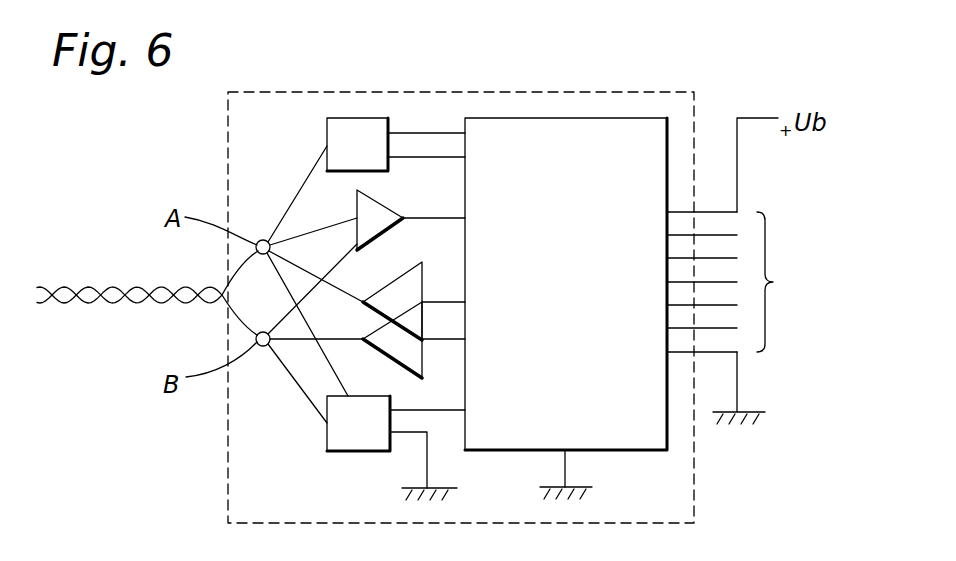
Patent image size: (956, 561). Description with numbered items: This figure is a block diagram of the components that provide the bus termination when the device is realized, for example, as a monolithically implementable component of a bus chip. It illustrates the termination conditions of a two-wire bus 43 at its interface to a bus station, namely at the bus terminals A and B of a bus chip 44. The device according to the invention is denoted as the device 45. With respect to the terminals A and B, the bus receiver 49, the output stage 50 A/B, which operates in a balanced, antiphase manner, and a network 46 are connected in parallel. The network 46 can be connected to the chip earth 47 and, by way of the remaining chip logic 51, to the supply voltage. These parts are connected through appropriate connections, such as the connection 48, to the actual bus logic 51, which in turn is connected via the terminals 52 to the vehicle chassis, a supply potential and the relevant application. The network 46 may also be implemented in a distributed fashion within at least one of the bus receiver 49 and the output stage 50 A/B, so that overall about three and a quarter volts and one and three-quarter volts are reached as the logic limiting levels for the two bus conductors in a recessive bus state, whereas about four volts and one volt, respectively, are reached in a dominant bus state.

The two-wire bus 43 is at (86, 304).
The bus chip 44 is at (543, 92).
The device 45 is at (356, 133).
The network 46 is at (350, 443).
The chip earth 47 is at (427, 460).
The connection line 48 is at (447, 410).
The bus receiver 49 is at (380, 213).
The output stage 50 is at (380, 302).
The chip logic 51 is at (650, 438).
The terminals 52 is at (738, 282).